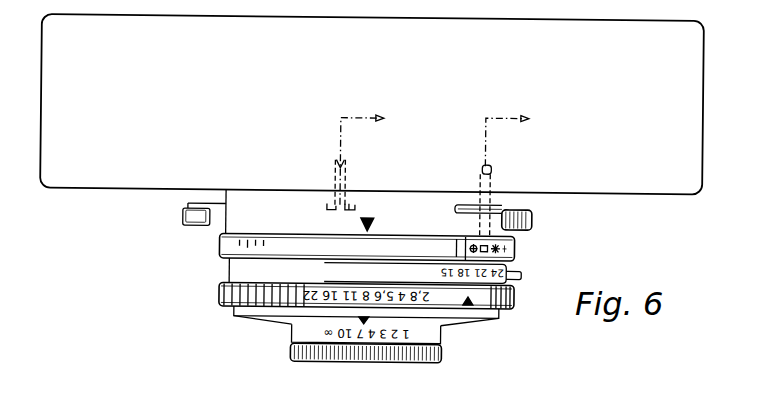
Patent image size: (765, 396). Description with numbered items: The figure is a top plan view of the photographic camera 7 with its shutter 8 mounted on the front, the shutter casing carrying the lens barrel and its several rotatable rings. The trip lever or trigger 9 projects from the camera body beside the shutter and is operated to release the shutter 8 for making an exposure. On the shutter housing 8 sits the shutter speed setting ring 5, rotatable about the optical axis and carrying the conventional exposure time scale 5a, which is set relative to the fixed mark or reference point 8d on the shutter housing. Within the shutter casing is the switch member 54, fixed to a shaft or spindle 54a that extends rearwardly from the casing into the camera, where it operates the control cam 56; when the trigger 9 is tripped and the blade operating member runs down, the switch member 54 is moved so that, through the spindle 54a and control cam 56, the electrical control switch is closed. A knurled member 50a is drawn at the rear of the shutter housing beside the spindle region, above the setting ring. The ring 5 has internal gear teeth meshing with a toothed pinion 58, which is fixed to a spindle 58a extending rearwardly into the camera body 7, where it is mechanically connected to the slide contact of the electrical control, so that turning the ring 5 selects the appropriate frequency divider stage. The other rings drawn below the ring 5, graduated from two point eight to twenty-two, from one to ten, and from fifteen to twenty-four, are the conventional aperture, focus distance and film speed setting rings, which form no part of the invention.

The photographic camera 7 is at (632, 193).
The shutter 8 is at (431, 201).
The fixed mark 8d is at (375, 221).
The trip lever 9 is at (183, 227).
The shutter speed setting ring 5 is at (224, 243).
The exposure time scale 5a is at (402, 250).
The switch member 54 is at (350, 202).
The spindle 54a is at (346, 168).
The control cam 56 is at (347, 113).
The toothed pinion 58 is at (517, 248).
The spindle 58a is at (492, 172).
The adjusting knob 50a is at (533, 210).